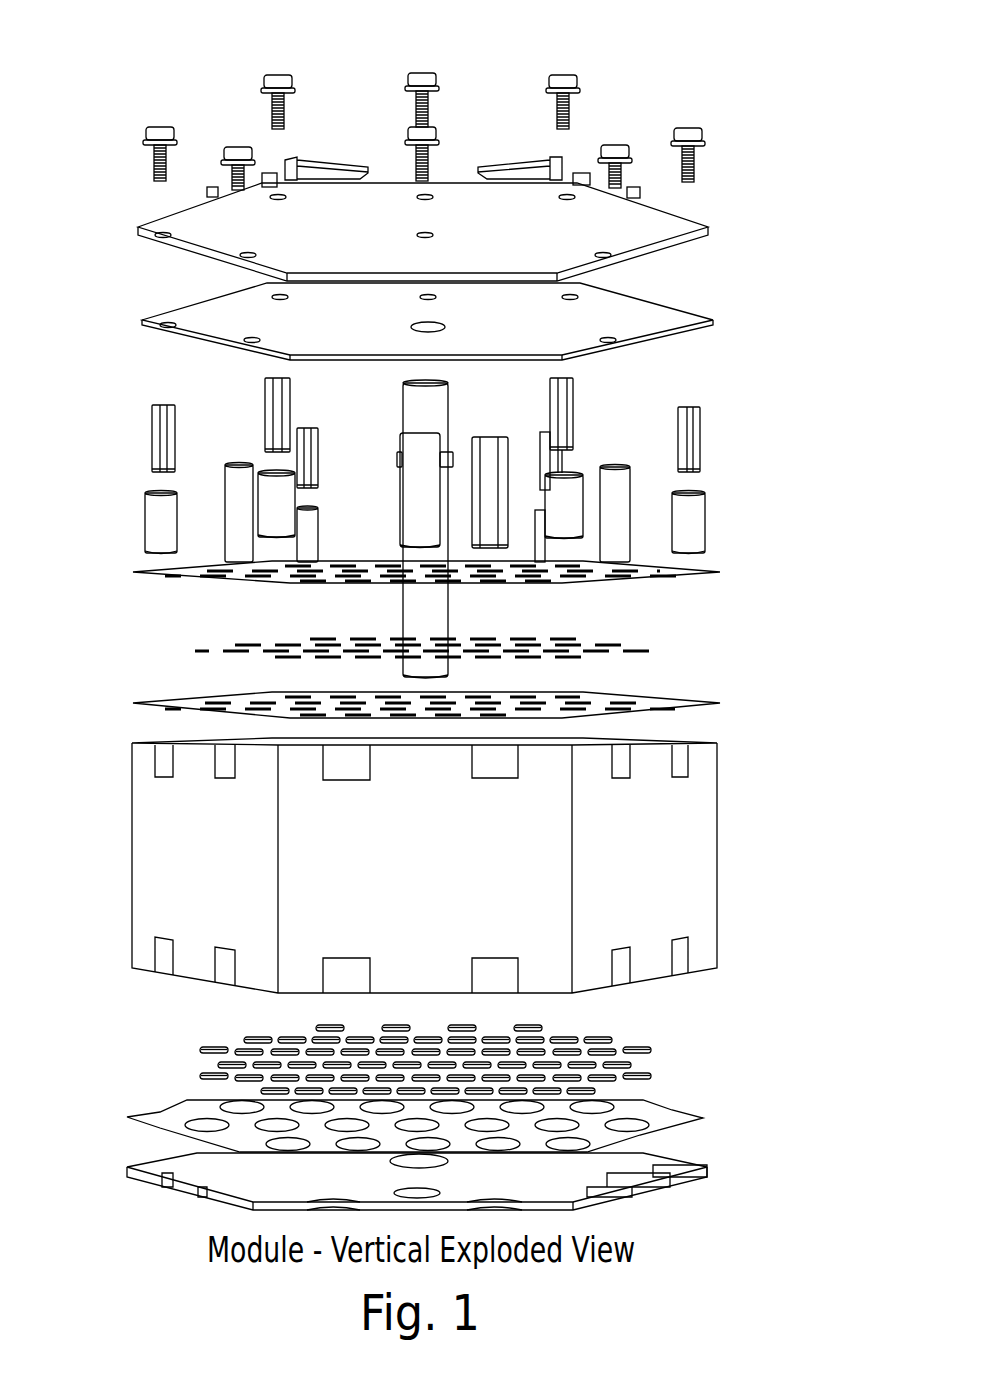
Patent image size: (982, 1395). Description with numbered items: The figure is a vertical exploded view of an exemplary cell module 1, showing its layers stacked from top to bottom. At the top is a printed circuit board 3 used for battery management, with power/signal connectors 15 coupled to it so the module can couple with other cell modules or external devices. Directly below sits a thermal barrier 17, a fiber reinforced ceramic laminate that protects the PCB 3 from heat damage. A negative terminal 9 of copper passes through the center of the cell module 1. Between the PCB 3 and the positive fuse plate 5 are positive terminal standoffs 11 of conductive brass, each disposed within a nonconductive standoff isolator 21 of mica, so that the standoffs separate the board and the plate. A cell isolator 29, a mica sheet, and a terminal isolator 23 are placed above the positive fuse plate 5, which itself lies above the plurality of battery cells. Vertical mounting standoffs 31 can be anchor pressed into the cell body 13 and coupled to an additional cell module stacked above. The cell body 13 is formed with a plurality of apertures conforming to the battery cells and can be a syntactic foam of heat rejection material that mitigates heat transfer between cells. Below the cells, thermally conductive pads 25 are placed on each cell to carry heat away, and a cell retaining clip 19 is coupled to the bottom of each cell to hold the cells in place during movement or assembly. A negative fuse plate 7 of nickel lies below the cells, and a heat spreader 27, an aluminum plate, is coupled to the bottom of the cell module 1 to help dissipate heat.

The cell module 1 is at (671, 75).
The printed circuit board 3 is at (713, 229).
The positive fuse plate 5 is at (708, 702).
The negative fuse plate 7 is at (703, 1118).
The negative terminal 9 is at (400, 417).
The positive terminal standoff 11 is at (150, 448).
The cell body 13 is at (718, 810).
The power/signal connectors 15 is at (205, 192).
The thermal barrier 17 is at (715, 323).
The cell retaining clip 19 is at (653, 1048).
The standoff isolator 21 is at (140, 518).
The terminal isolator 23 is at (190, 645).
The thermally conductive pads 25 is at (200, 1073).
The heat spreader 27 is at (707, 1168).
The cell isolator 29 is at (730, 572).
The vertical mounting standoffs 31 is at (623, 492).